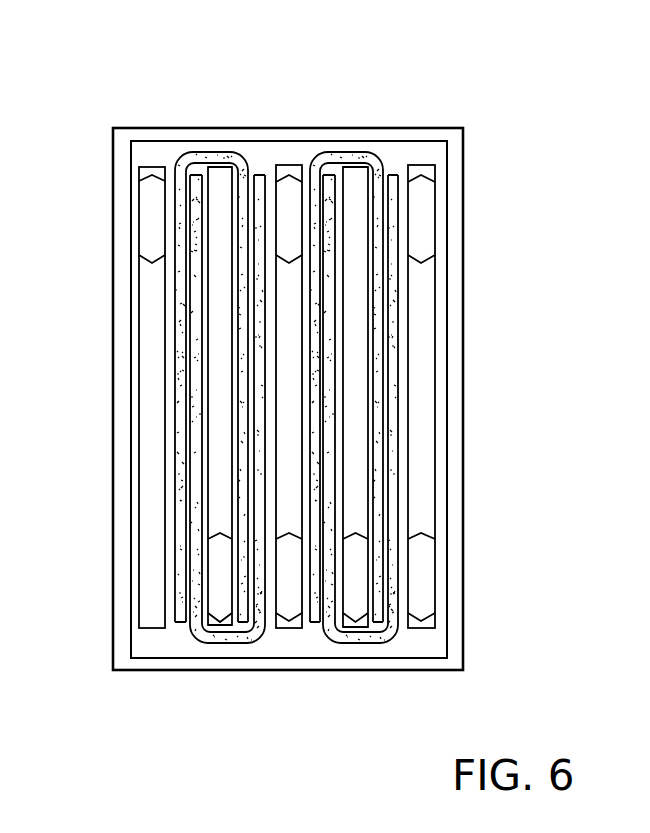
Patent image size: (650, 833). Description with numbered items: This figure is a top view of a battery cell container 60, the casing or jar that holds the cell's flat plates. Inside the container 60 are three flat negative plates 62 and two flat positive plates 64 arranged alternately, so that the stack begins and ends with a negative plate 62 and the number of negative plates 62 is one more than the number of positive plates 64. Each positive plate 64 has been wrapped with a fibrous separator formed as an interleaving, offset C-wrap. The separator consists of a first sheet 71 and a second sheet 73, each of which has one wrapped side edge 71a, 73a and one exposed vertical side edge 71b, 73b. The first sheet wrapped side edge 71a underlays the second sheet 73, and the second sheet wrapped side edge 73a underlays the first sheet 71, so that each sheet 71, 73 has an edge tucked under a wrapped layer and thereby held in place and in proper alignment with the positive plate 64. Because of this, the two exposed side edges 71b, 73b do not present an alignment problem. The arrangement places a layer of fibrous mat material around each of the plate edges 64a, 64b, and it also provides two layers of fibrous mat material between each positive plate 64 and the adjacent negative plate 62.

The battery cell container 60 is at (462, 372).
The negative plate 62 is at (140, 338).
The positive plate 64 is at (342, 460).
The plate edge 64a is at (220, 170).
The plate edge 64b is at (222, 628).
The first sheet 71 is at (198, 628).
The first sheet wrapped side edge 71a is at (195, 175).
The first sheet exposed side edge 71b is at (263, 175).
The second sheet 73 is at (180, 155).
The second sheet wrapped side edge 73a is at (243, 628).
The second sheet exposed side edge 73b is at (180, 625).